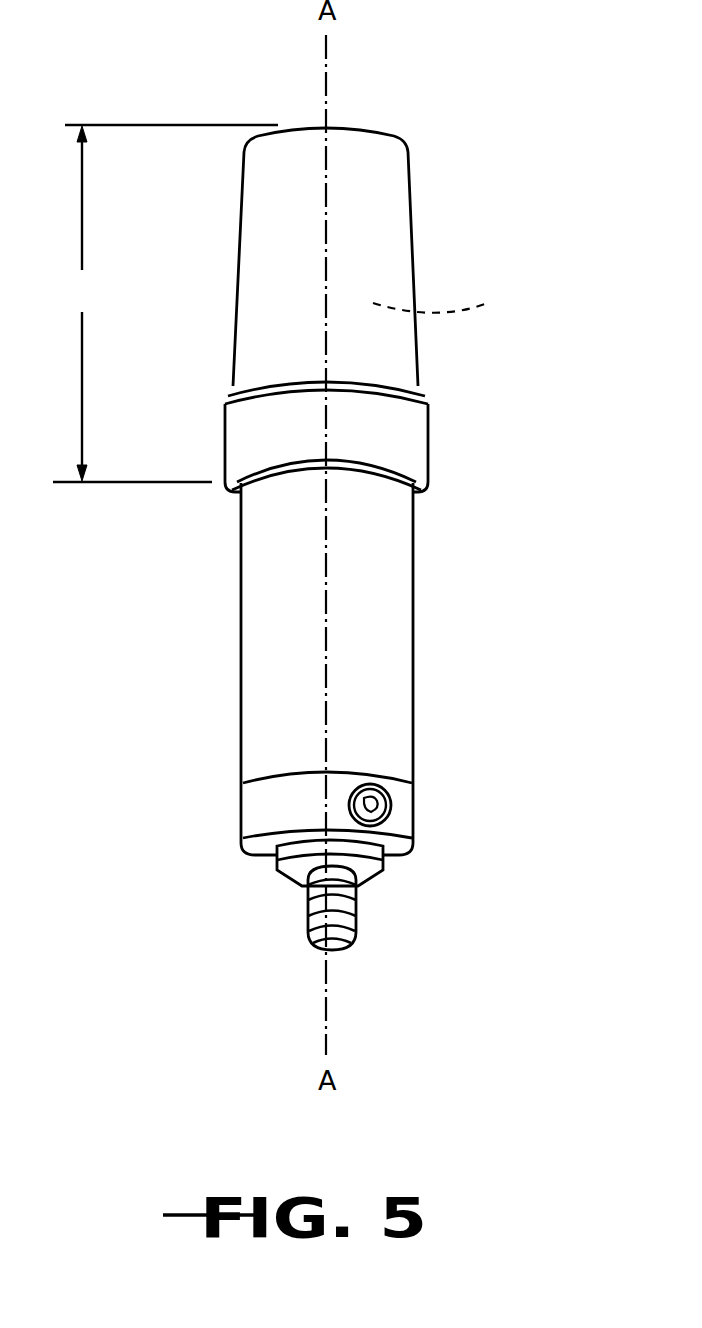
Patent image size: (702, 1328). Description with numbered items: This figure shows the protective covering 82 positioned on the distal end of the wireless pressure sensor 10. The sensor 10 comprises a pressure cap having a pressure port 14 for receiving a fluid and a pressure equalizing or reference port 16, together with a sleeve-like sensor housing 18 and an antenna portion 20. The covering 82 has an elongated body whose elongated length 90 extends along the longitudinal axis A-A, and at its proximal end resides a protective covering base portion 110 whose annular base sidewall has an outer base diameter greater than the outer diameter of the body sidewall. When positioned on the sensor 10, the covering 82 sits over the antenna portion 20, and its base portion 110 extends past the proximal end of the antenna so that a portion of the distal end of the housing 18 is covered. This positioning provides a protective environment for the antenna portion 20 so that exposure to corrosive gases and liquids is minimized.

The wireless pressure sensor 10 is at (203, 667).
The pressure port 14 is at (334, 952).
The pressure equalizing or reference port 16 is at (391, 801).
The sensor housing 18 is at (393, 618).
The antenna portion 20 is at (451, 303).
The protective covering 82 is at (395, 217).
The elongated length 90 is at (165, 303).
The protective covering base portion 110 is at (430, 442).